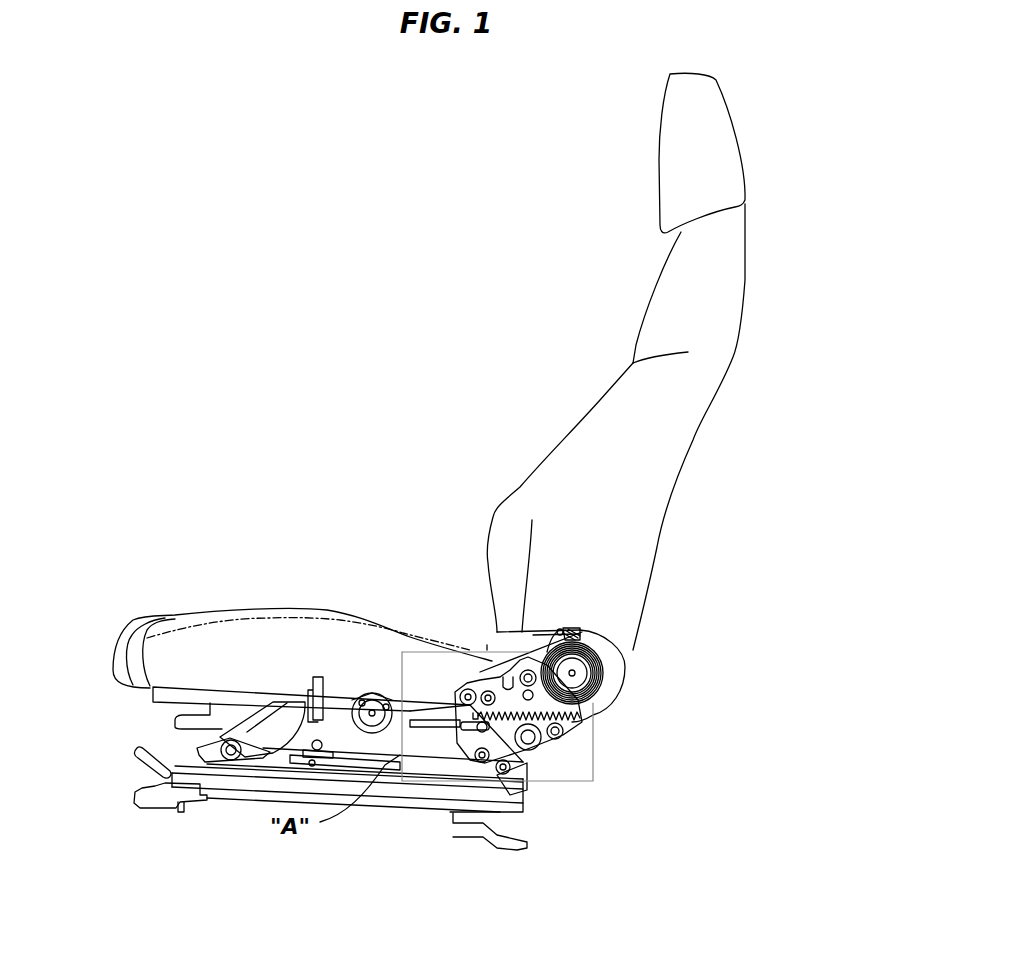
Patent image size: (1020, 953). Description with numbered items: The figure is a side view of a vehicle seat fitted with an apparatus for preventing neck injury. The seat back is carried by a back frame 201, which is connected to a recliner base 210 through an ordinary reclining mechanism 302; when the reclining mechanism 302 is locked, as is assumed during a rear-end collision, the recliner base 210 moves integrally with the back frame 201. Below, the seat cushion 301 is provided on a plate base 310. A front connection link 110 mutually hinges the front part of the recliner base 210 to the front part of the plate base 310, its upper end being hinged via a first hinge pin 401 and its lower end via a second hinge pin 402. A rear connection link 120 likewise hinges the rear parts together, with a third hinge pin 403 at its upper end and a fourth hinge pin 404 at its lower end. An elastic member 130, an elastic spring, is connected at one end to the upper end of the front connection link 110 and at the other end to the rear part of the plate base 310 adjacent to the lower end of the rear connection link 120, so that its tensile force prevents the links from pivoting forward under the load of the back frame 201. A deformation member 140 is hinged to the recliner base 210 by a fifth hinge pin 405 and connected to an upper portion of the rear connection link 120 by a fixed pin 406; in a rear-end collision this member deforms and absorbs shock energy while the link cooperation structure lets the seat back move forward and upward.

The front connection link 110 is at (453, 748).
The rear connection link 120 is at (537, 750).
The elastic member 130 is at (583, 720).
The deformation member 140 is at (487, 650).
The back frame 201 is at (598, 643).
The recliner base 210 is at (522, 632).
The seat cushion 301 is at (238, 633).
The reclining mechanism 302 is at (605, 660).
The plate base 310 is at (505, 772).
The first hinge pin 401 is at (455, 688).
The second hinge pin 402 is at (482, 762).
The third hinge pin 403 is at (567, 632).
The fourth hinge pin 404 is at (563, 740).
The fifth hinge pin 405 is at (470, 693).
The fixed pin 406 is at (603, 703).